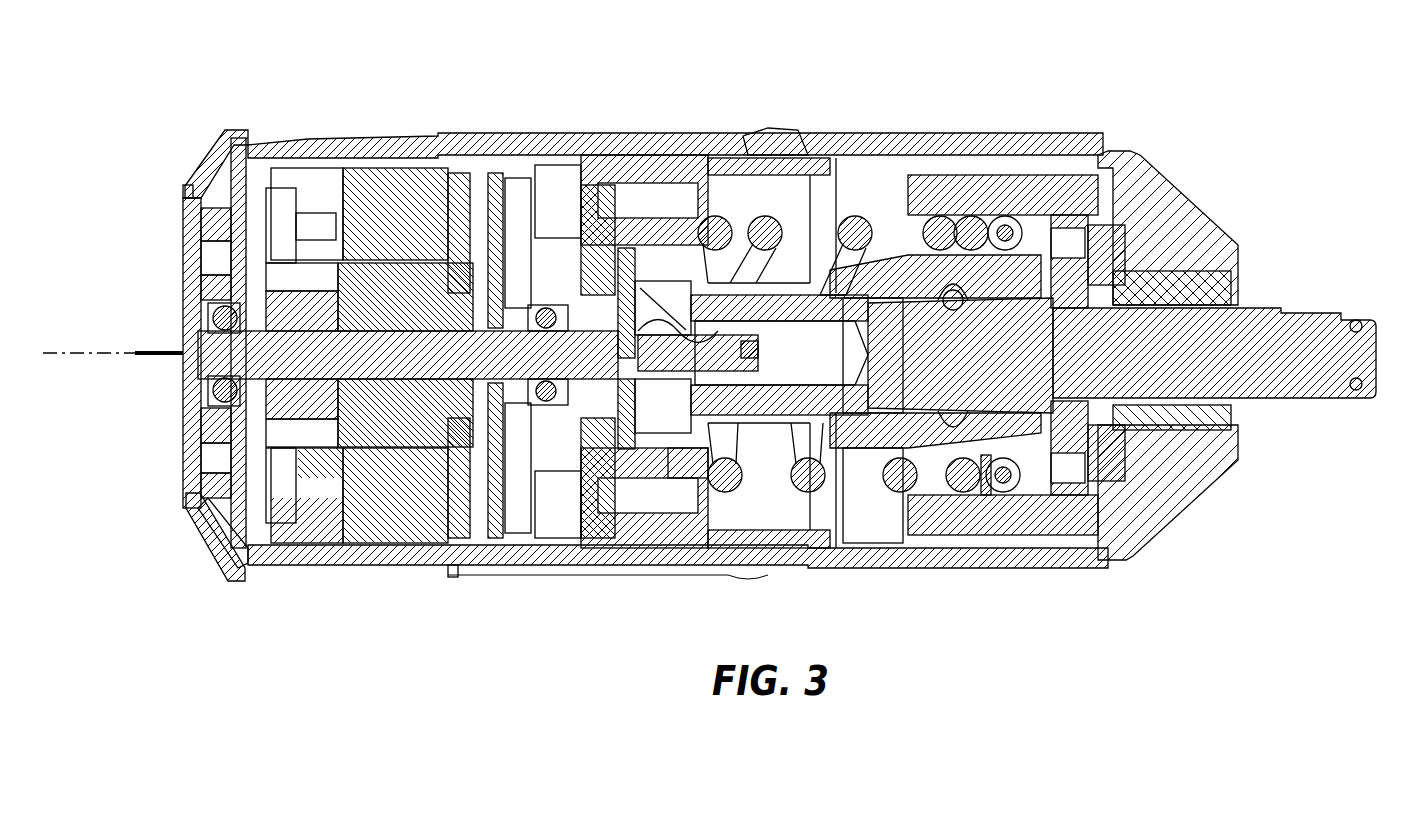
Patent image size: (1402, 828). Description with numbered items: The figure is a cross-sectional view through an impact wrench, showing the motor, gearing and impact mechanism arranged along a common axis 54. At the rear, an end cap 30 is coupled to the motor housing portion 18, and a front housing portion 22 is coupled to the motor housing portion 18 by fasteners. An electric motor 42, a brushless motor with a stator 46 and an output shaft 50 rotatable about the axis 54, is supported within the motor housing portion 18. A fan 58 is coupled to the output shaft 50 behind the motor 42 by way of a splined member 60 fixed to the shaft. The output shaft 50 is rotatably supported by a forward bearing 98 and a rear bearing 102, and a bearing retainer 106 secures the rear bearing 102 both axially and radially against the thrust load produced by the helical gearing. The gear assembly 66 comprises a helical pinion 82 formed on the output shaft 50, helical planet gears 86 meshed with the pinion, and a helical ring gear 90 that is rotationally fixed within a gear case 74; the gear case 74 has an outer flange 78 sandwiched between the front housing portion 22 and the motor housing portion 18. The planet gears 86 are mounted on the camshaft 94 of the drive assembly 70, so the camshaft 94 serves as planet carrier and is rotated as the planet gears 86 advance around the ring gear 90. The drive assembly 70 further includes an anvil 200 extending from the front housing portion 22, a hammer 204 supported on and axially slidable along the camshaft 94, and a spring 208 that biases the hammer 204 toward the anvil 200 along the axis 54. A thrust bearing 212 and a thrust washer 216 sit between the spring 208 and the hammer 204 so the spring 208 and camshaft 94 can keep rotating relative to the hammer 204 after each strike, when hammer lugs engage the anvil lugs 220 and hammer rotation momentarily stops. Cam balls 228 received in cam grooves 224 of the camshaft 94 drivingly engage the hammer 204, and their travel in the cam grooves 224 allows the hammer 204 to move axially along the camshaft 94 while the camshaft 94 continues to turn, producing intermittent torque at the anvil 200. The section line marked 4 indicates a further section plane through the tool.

The section line 4- 4 is at (145, 347).
The motor housing portion 18 is at (420, 130).
The front housing portion 22 is at (1085, 140).
The end cap 30 is at (175, 445).
The electric motor 42 is at (313, 497).
The stator 46 is at (378, 212).
The output shaft 50 is at (396, 370).
The axis 54 is at (76, 350).
The fan 58 is at (230, 495).
The splined member 60 is at (290, 245).
The gear assembly 66 is at (670, 155).
The drive assembly 70 is at (870, 510).
The gear case 74 is at (748, 128).
The outer flange 78 is at (790, 155).
The helical pinion 82 is at (700, 322).
The helical planet gears 86 is at (658, 467).
The helical ring gear 90 is at (600, 160).
The camshaft 94 is at (770, 390).
The forward bearing 98 is at (522, 245).
The rear bearing 102 is at (202, 312).
The bearing retainer 106 is at (177, 267).
The anvil 200 is at (1247, 317).
The hammer 204 is at (940, 178).
The spring 208 is at (832, 208).
The thrust bearing 212 is at (1000, 210).
The thrust washer 216 is at (978, 210).
The anvil lugs 220 is at (1060, 233).
The cam grooves 224 is at (940, 350).
The cam balls 228 is at (943, 303).